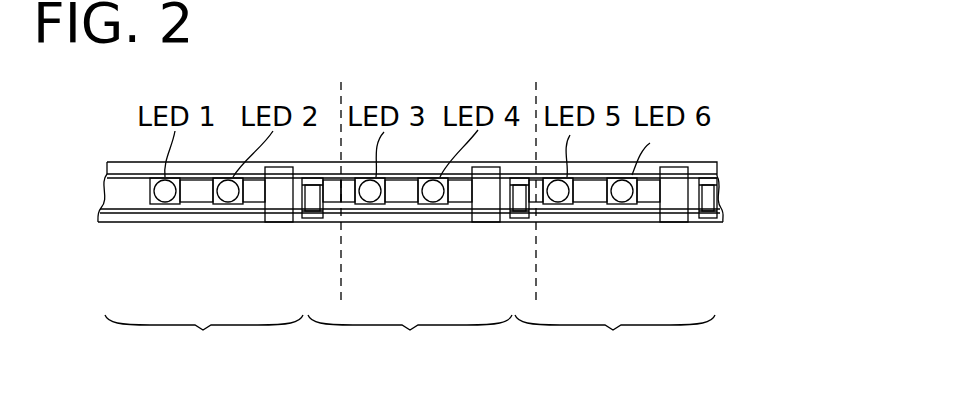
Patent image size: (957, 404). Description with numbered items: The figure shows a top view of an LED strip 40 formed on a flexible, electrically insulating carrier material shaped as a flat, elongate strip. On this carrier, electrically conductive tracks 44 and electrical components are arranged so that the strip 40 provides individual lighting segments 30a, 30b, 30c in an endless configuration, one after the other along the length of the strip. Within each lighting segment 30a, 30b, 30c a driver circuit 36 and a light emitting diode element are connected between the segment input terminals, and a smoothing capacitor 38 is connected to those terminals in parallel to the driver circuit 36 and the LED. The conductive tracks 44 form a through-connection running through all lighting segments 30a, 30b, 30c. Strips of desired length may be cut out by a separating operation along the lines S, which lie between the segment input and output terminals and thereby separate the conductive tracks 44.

The LED strip 40 is at (745, 144).
The driver circuit 36 is at (277, 223).
The smoothing capacitor 38 is at (313, 220).
The electrically conductive tracks 44 is at (108, 176).
The cutting lines S is at (535, 76).
The first lighting segment 30a is at (204, 342).
The second lighting segment 30b is at (410, 341).
The third lighting segment 30c is at (615, 342).